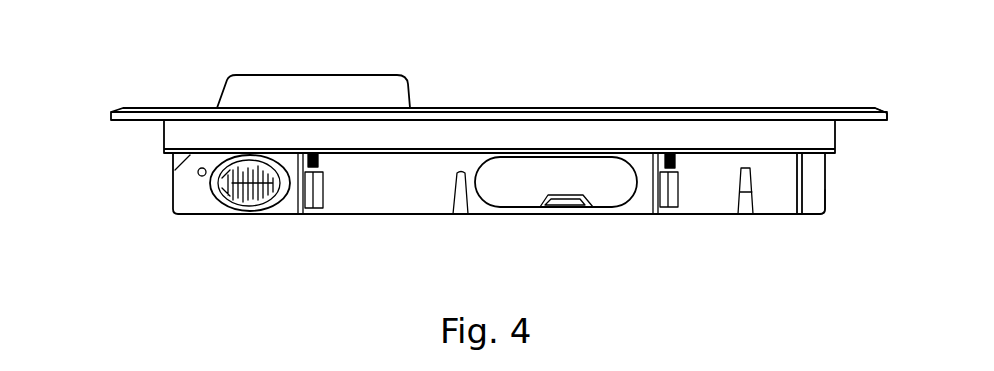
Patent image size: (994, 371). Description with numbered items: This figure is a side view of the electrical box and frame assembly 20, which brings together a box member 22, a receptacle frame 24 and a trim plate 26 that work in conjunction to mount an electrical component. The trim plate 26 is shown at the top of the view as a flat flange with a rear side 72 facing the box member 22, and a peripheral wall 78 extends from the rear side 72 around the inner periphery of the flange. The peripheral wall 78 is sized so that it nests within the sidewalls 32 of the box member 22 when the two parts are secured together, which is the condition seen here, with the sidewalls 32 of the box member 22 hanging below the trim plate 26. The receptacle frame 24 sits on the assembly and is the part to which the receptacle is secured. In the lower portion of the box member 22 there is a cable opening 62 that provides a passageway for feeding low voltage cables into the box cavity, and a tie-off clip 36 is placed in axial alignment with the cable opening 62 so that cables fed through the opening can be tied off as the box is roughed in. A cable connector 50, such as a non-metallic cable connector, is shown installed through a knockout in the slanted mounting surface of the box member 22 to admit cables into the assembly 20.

The vehicle component assembly 20 is at (84, 109).
The box member 22 is at (803, 215).
The receptacle frame 24 is at (333, 75).
The trim plate 26 is at (817, 108).
The sidewalls 32 is at (369, 194).
The tie-off clips 36 is at (565, 195).
The cable connector 50 is at (262, 210).
The cable opening 62 is at (615, 193).
The rear side 72 is at (858, 120).
The peripheral wall 78 is at (430, 143).